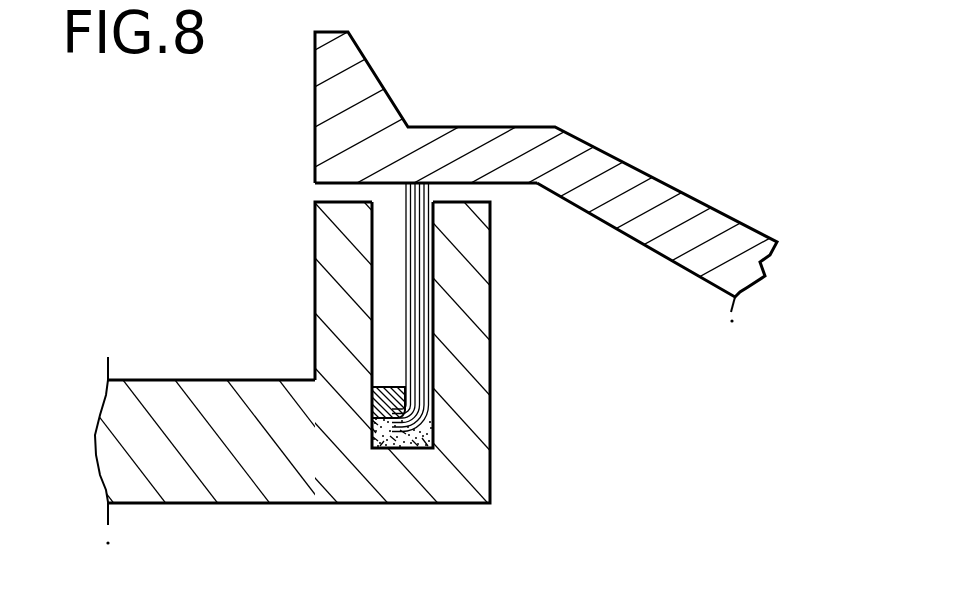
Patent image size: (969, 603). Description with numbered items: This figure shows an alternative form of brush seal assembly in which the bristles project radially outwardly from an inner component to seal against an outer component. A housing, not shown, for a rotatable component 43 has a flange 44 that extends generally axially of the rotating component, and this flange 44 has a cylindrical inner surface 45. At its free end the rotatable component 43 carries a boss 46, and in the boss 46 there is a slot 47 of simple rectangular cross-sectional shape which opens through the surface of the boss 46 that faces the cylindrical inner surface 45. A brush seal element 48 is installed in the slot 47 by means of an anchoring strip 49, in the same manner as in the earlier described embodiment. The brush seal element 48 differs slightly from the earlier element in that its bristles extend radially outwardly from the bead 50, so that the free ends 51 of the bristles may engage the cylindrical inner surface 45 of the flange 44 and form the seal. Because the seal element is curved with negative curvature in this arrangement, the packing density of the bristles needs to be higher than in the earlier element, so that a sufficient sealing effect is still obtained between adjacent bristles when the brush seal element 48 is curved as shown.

The rotatable component 43 is at (163, 393).
The flange 44 is at (703, 227).
The cylindrical inner surface 45 is at (505, 186).
The boss 46 is at (467, 410).
The slot 47 is at (387, 287).
The brush seal element 48 is at (453, 335).
The anchoring strip 49 is at (385, 398).
The bead 50 is at (387, 440).
The free ends 51 is at (407, 200).